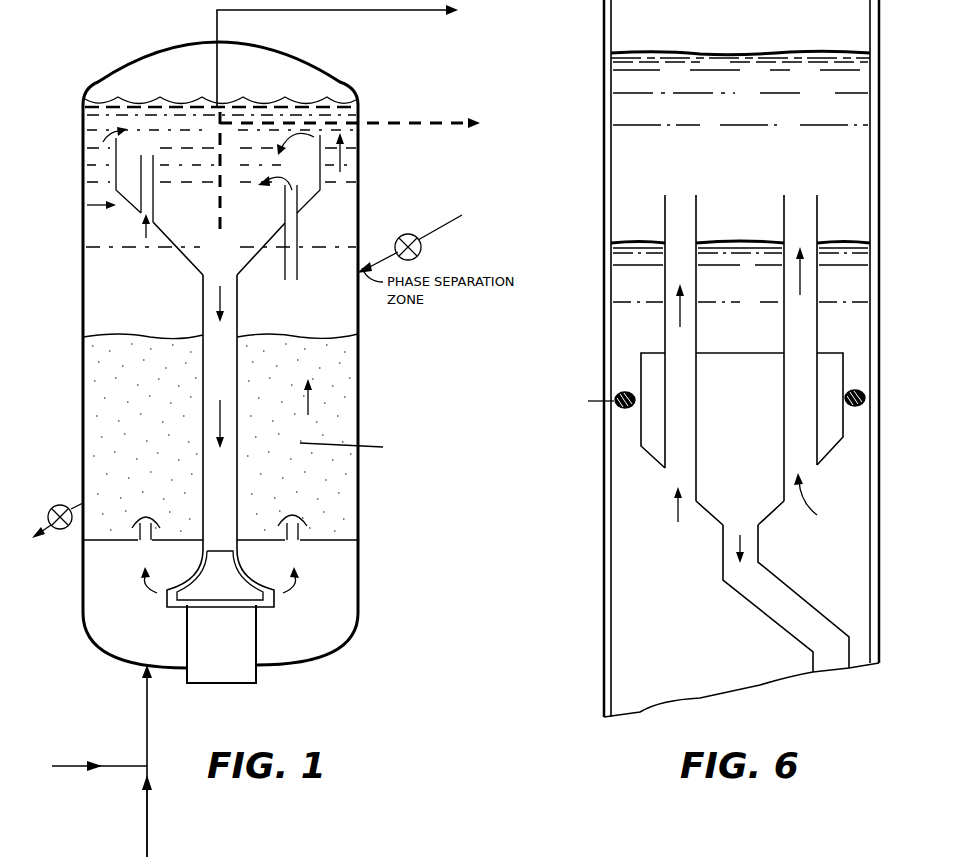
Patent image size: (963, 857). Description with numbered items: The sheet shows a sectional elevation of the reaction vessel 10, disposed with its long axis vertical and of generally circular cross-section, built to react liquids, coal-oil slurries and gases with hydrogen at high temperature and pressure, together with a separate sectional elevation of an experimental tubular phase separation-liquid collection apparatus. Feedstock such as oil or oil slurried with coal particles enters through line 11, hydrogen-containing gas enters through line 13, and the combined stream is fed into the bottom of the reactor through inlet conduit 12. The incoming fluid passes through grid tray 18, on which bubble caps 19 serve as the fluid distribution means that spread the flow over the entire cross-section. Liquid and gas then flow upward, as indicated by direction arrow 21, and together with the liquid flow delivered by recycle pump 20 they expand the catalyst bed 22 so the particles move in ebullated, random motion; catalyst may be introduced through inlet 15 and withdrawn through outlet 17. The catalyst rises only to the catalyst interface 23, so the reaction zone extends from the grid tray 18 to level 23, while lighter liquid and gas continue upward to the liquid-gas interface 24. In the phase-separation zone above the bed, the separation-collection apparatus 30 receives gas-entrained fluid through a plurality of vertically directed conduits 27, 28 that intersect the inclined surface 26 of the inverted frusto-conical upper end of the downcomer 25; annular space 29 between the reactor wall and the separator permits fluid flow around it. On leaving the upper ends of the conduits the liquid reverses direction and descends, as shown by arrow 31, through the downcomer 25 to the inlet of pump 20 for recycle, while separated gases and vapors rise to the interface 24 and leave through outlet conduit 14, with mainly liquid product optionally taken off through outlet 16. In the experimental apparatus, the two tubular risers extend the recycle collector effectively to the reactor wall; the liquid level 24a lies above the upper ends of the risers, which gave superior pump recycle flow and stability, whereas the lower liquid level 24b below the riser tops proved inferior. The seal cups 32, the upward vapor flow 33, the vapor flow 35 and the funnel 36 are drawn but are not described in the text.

In FIG. 1, the reaction vessel 10 is at (78, 120).
In FIG. 6, the reaction vessel 10 is at (877, 320).
In FIG. 1, the feedstock line 11 is at (121, 765).
In FIG. 1, the inlet conduit 12 is at (148, 720).
In FIG. 1, the gas feed line 13 is at (148, 836).
In FIG. 1, the outlet conduit 14 is at (400, 12).
In FIG. 1, the catalyst inlet 15 is at (437, 228).
In FIG. 1, the liquid outlet 16 is at (380, 123).
In FIG. 1, the catalyst outlet 17 is at (38, 530).
In FIG. 1, the grid tray 18 is at (330, 541).
In FIG. 1, the bubble caps 19 is at (282, 513).
In FIG. 1, the recycle pump 20 is at (260, 608).
In FIG. 1, the direction arrow 21 is at (312, 397).
In FIG. 1, the catalyst bed 22 is at (219, 437).
In FIG. 1, the catalyst interface 23 is at (323, 335).
In FIG. 1, the liquid-gas interface 24 is at (138, 102).
In FIG. 6, the liquid level a 24a is at (636, 52).
In FIG. 6, the liquid level b 24b is at (623, 242).
In FIG. 1, the downcomer 25 is at (240, 308).
In FIG. 6, the downcomer 25 is at (760, 549).
In FIG. 1, the inclined surface 26 is at (312, 200).
In FIG. 6, the inclined surface 26 is at (710, 520).
In FIG. 1, the vertically directed conduit 27 is at (299, 216).
In FIG. 6, the vertically directed conduit 27 is at (697, 226).
In FIG. 1, the vertically directed conduit 28 is at (154, 178).
In FIG. 6, the vertically directed conduit 28 is at (818, 226).
In FIG. 1, the annular space 29 is at (96, 168).
In FIG. 1, the separation-collection apparatus 30 is at (88, 206).
In FIG. 6, the separation-collection apparatus 30 is at (642, 464).
In FIG. 1, the flow direction arrow 31 is at (218, 298).
In FIG. 1, the seal cup 32 is at (118, 158).
In FIG. 6, the seal cup 32 is at (845, 418).
In FIG. 1, the vapor flow 33 is at (343, 154).
In FIG. 1, the vapor flow 35 is at (284, 143).
In FIG. 1, the funnel 36 is at (200, 276).